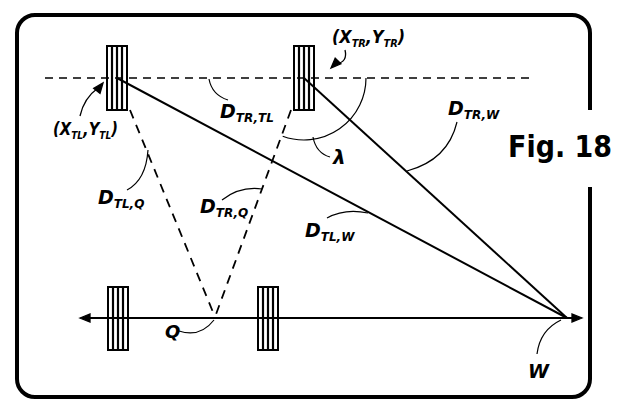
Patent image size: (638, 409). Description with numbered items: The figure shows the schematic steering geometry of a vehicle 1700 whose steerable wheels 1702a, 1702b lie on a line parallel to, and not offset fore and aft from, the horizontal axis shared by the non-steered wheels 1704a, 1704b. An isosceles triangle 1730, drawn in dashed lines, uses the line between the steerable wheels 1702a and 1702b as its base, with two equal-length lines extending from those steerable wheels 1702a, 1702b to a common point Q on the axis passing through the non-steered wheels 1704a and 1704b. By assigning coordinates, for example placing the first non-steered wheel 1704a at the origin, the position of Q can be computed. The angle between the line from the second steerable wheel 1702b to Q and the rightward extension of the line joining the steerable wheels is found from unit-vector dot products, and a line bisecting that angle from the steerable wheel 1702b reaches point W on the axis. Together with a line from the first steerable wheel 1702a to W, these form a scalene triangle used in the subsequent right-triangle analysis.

The vehicle 1700 is at (68, 64).
The first steerable wheel 1702a is at (150, 53).
The second steerable wheel 1702b is at (294, 47).
The first non-steered wheel 1704a is at (108, 302).
The second non-steered wheel 1704b is at (257, 330).
The isosceles triangle 1730 is at (152, 219).